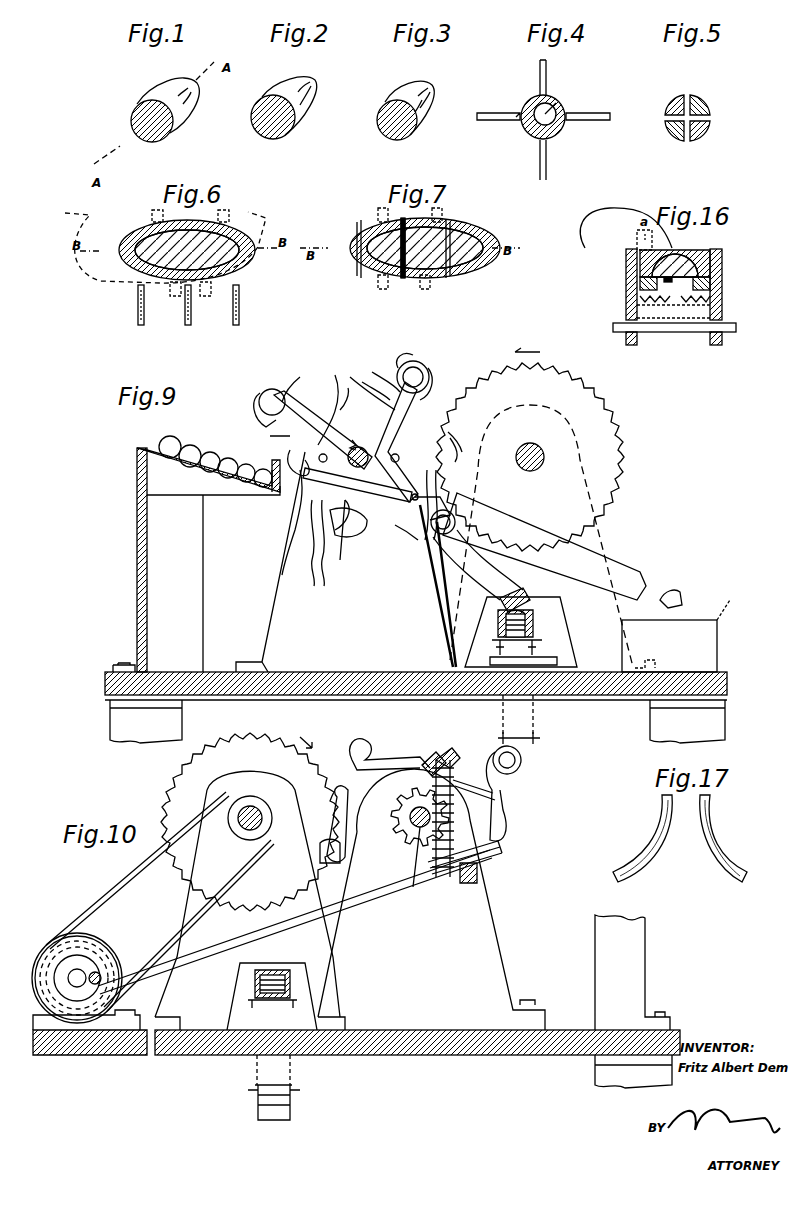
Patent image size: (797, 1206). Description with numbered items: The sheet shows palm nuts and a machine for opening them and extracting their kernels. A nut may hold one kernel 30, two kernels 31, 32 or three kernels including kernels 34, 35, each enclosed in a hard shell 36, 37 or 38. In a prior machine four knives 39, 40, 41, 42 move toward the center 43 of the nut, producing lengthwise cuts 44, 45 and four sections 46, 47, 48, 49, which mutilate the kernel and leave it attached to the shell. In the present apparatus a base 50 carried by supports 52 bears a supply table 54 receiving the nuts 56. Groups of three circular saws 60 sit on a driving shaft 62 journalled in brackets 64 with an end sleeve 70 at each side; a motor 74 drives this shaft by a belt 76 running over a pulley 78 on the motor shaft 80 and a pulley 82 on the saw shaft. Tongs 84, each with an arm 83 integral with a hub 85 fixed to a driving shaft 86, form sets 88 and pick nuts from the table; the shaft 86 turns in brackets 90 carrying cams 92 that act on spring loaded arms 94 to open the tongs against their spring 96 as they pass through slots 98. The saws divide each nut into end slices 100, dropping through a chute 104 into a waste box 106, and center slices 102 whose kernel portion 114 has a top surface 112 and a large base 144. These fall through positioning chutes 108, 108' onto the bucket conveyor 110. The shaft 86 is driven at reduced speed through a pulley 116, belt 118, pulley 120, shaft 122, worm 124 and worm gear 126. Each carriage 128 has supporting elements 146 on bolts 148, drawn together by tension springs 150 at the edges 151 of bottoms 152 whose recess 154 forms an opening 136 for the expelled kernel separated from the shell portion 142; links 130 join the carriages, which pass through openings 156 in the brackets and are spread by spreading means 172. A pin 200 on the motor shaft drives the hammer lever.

In FIG. 1, the kernel 30 is at (137, 106).
In FIG. 4, the kernel 30 is at (553, 136).
In FIG. 2, the kernel 31 is at (265, 137).
In FIG. 2, the kernel 32 is at (282, 136).
In FIG. 3, the kernel 34 is at (425, 106).
In FIG. 3, the kernel 35 is at (378, 108).
In FIG. 1, the shell 36 is at (186, 120).
In FIG. 4, the shell 36 is at (560, 110).
In FIG. 2, the shell 37 is at (305, 82).
In FIG. 3, the shell 38 is at (428, 85).
In FIG. 4, the knife 39 is at (546, 68).
In FIG. 4, the knife 40 is at (588, 121).
In FIG. 4, the knife 41 is at (546, 176).
In FIG. 4, the knife 42 is at (498, 121).
In FIG. 4, the center of the nut 43 is at (556, 103).
In FIG. 5, the cut 44 is at (683, 95).
In FIG. 5, the cut 45 is at (712, 118).
In FIG. 5, the section 46 is at (668, 95).
In FIG. 5, the section 47 is at (708, 105).
In FIG. 5, the section 48 is at (708, 140).
In FIG. 5, the section 49 is at (672, 138).
In FIG. 9, the base 50 is at (598, 680).
In FIG. 10, the base 50 is at (478, 1056).
In FIG. 9, the supports 52 is at (115, 742).
In FIG. 10, the supports 52 is at (600, 1075).
In FIG. 9, the supply table 54 is at (137, 513).
In FIG. 10, the supply table 54 is at (638, 936).
In FIG. 6, the nuts 56 is at (128, 238).
In FIG. 9, the nuts 56 is at (265, 465).
In FIG. 6, the circular saws 60 is at (144, 305).
In FIG. 9, the circular saws 60 is at (610, 446).
In FIG. 10, the circular saws 60 is at (312, 775).
In FIG. 9, the driving shaft 62 is at (535, 445).
In FIG. 10, the driving shaft 62 is at (250, 806).
In FIG. 9, the brackets 64 is at (605, 533).
In FIG. 10, the brackets 64 is at (195, 893).
In FIG. 9, the end sleeve 70 is at (545, 464).
In FIG. 10, the motor 74 is at (112, 1027).
In FIG. 10, the belt 76 is at (140, 872).
In FIG. 10, the pulley 78 is at (45, 950).
In FIG. 10, the shaft of the motor 80 is at (77, 986).
In FIG. 9, the pulley 82 is at (357, 440).
In FIG. 10, the pulley 82 is at (266, 832).
In FIG. 9, the arm 83 is at (368, 498).
In FIG. 6, the tongs 84 is at (167, 250).
In FIG. 7, the tongs 84 is at (378, 210).
In FIG. 9, the tongs 84 is at (296, 378).
In FIG. 10, the tongs 84 is at (508, 816).
In FIG. 9, the hub 85 is at (398, 436).
In FIG. 9, the driving shaft 86 is at (310, 584).
In FIG. 10, the driving shaft 86 is at (418, 885).
In FIG. 9, the set of tongs 88 is at (266, 384).
In FIG. 9, the brackets 90 is at (280, 618).
In FIG. 10, the brackets 90 is at (498, 945).
In FIG. 9, the cam 92 is at (395, 420).
In FIG. 10, the cam 92 is at (395, 825).
In FIG. 9, the spring loaded arms 94 is at (378, 545).
In FIG. 9, the spring 96 is at (380, 530).
In FIG. 9, the slots 98 is at (275, 495).
In FIG. 7, the end slices 100 is at (358, 264).
In FIG. 9, the end slices 100 is at (680, 592).
In FIG. 7, the center slices 102 is at (378, 278).
In FIG. 9, the center slices 102 is at (462, 498).
In FIG. 9, the chute 104 is at (632, 566).
In FIG. 9, the waste box 106 is at (705, 640).
In FIG. 9, the positioning chute 108 is at (481, 571).
In FIG. 17, the positioning chute 108 is at (642, 838).
In FIG. 17, the positioning chute 108' is at (735, 838).
In FIG. 9, the bucket conveyor 110 is at (542, 620).
In FIG. 10, the bucket conveyor 110 is at (292, 982).
In FIG. 7, the top surface 112 is at (356, 230).
In FIG. 16, the top surface 112 is at (683, 252).
In FIG. 7, the kernel portion 114 is at (402, 222).
In FIG. 16, the kernel portion 114 is at (626, 228).
In FIG. 10, the pulley 116 is at (72, 895).
In FIG. 10, the belt 118 is at (392, 915).
In FIG. 10, the pulley 120 is at (495, 858).
In FIG. 10, the shaft 122 is at (477, 880).
In FIG. 10, the worm 124 is at (449, 809).
In FIG. 10, the worm gear 126 is at (410, 840).
In FIG. 16, the carriage 128 is at (725, 282).
In FIG. 16, the links 130 is at (637, 312).
In FIG. 16, the opening 136 is at (672, 300).
In FIG. 16, the shell portion 142 is at (672, 282).
In FIG. 7, the large base 144 is at (418, 226).
In FIG. 16, the large base 144 is at (641, 262).
In FIG. 16, the supporting elements 146 is at (626, 276).
In FIG. 16, the bolts 148 is at (718, 340).
In FIG. 16, the tension springs 150 is at (613, 326).
In FIG. 16, the edges 151 is at (683, 300).
In FIG. 16, the bottoms 152 is at (637, 252).
In FIG. 16, the recess 154 is at (645, 316).
In FIG. 10, the openings 156 is at (310, 1020).
In FIG. 9, the spreading means 172 is at (542, 650).
In FIG. 10, the pin 200 is at (94, 986).